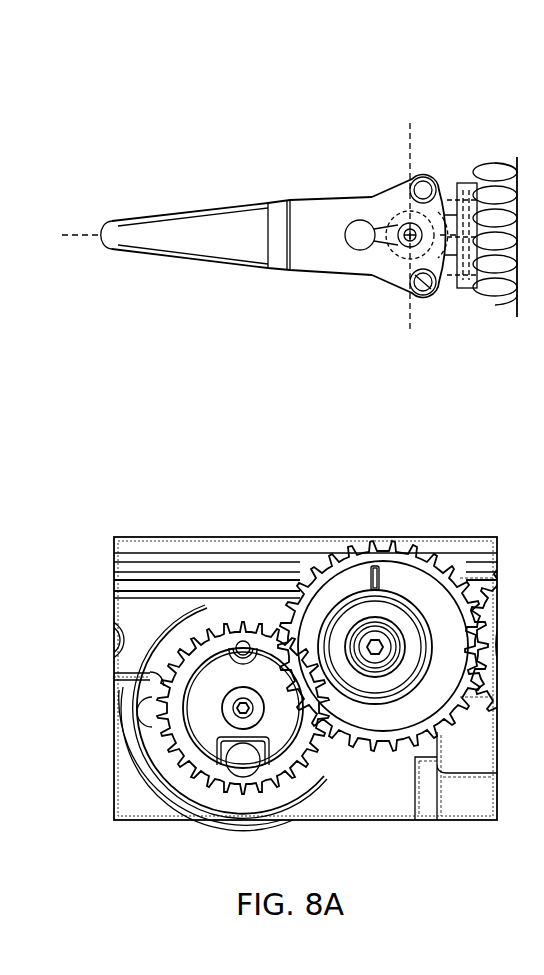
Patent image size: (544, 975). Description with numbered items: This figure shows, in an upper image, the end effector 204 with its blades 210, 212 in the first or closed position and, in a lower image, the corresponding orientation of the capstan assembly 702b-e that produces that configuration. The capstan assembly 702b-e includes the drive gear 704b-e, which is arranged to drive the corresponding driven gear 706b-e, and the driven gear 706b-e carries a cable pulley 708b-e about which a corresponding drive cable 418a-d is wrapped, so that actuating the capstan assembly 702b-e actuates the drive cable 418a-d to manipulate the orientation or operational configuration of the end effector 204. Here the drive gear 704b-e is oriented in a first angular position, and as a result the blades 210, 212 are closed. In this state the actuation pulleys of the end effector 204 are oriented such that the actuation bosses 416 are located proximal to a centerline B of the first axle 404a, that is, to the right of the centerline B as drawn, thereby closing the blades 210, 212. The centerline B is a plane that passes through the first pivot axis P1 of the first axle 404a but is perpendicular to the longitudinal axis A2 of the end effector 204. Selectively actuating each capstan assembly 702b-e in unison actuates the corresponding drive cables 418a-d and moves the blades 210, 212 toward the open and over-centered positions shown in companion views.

The end effector 204 is at (170, 60).
The blade 210 is at (236, 212).
The blade 212 is at (205, 226).
The actuation boss 416 is at (425, 185).
The first axle 404a is at (372, 262).
The longitudinal axis A2 is at (66, 233).
The first pivot axis P1 is at (404, 212).
The centerline B is at (405, 125).
The capstan assembly 702b-e is at (182, 470).
The drive cable 418a-d is at (255, 590).
The drive gear 704b-e is at (178, 762).
The driven gear 706b-e is at (403, 538).
The cable pulley 708b-e is at (386, 694).